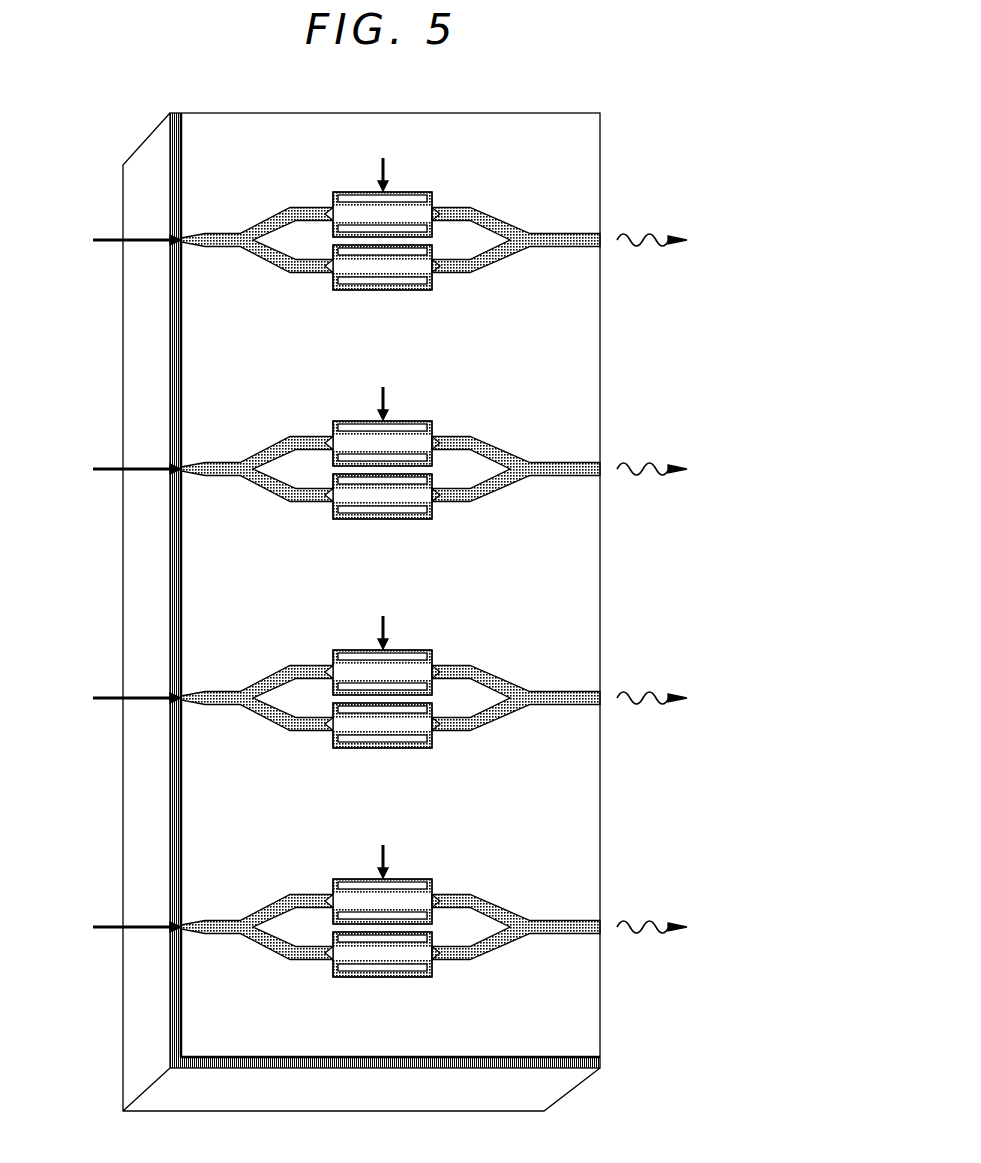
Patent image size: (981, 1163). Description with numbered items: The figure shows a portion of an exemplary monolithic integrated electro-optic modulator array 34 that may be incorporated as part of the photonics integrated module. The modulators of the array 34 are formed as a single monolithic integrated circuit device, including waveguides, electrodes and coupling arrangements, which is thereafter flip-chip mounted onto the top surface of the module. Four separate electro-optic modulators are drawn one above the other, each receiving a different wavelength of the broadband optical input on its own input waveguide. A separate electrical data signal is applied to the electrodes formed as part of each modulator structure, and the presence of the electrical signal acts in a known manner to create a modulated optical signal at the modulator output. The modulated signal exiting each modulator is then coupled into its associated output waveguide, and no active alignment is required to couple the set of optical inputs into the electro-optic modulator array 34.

The monolithic integrated electro-optic modulator array 34 is at (542, 94).